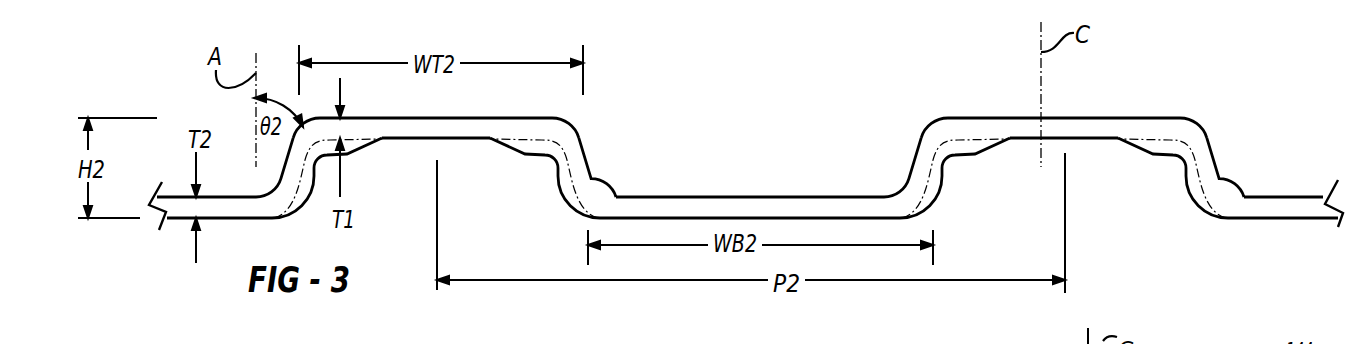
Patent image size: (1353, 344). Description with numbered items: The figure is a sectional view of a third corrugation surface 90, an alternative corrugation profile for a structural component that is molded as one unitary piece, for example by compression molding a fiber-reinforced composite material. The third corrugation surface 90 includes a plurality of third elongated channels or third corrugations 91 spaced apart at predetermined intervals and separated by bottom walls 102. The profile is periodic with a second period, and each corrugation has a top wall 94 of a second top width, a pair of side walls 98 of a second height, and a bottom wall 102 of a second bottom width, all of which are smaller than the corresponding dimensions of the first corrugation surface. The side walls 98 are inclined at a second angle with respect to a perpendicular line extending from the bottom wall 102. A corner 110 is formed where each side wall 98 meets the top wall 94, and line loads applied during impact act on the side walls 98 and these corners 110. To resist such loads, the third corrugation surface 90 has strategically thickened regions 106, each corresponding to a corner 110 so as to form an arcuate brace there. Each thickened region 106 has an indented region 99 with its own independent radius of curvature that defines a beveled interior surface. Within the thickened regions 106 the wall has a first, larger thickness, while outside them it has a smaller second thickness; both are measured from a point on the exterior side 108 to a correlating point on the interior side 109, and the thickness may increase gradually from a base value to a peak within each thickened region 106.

The third corrugation surface 90 is at (746, 151).
The third corrugation 91 is at (760, 92).
The top wall 94 is at (1071, 118).
The side wall 98 is at (908, 165).
The indented region 99 is at (943, 163).
The bottom wall 102 is at (733, 197).
The thickened region 106 is at (950, 148).
The exterior side 108 is at (1290, 197).
The interior side 109 is at (1282, 218).
The corner 110 is at (578, 131).